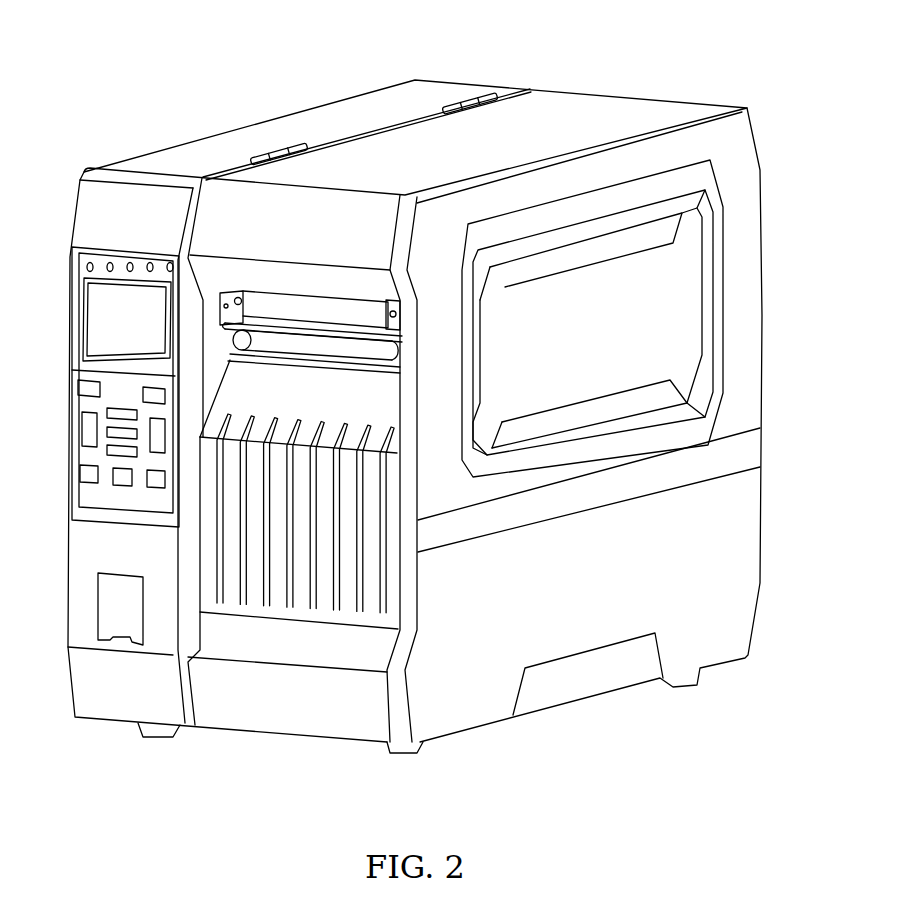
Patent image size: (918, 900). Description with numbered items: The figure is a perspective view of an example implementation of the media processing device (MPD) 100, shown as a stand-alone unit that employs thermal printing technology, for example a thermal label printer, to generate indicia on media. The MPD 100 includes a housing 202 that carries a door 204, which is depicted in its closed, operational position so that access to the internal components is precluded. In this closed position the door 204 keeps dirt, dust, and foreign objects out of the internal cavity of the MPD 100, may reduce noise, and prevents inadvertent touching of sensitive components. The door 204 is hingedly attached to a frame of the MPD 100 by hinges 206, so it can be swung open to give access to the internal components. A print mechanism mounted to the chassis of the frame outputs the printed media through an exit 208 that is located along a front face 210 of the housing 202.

The media processing device (MPD) 100 is at (103, 47).
The housing 202 is at (633, 98).
The door 204 is at (762, 315).
The hinges 206 is at (263, 157).
The exit 208 is at (312, 328).
The front face 210 is at (287, 722).